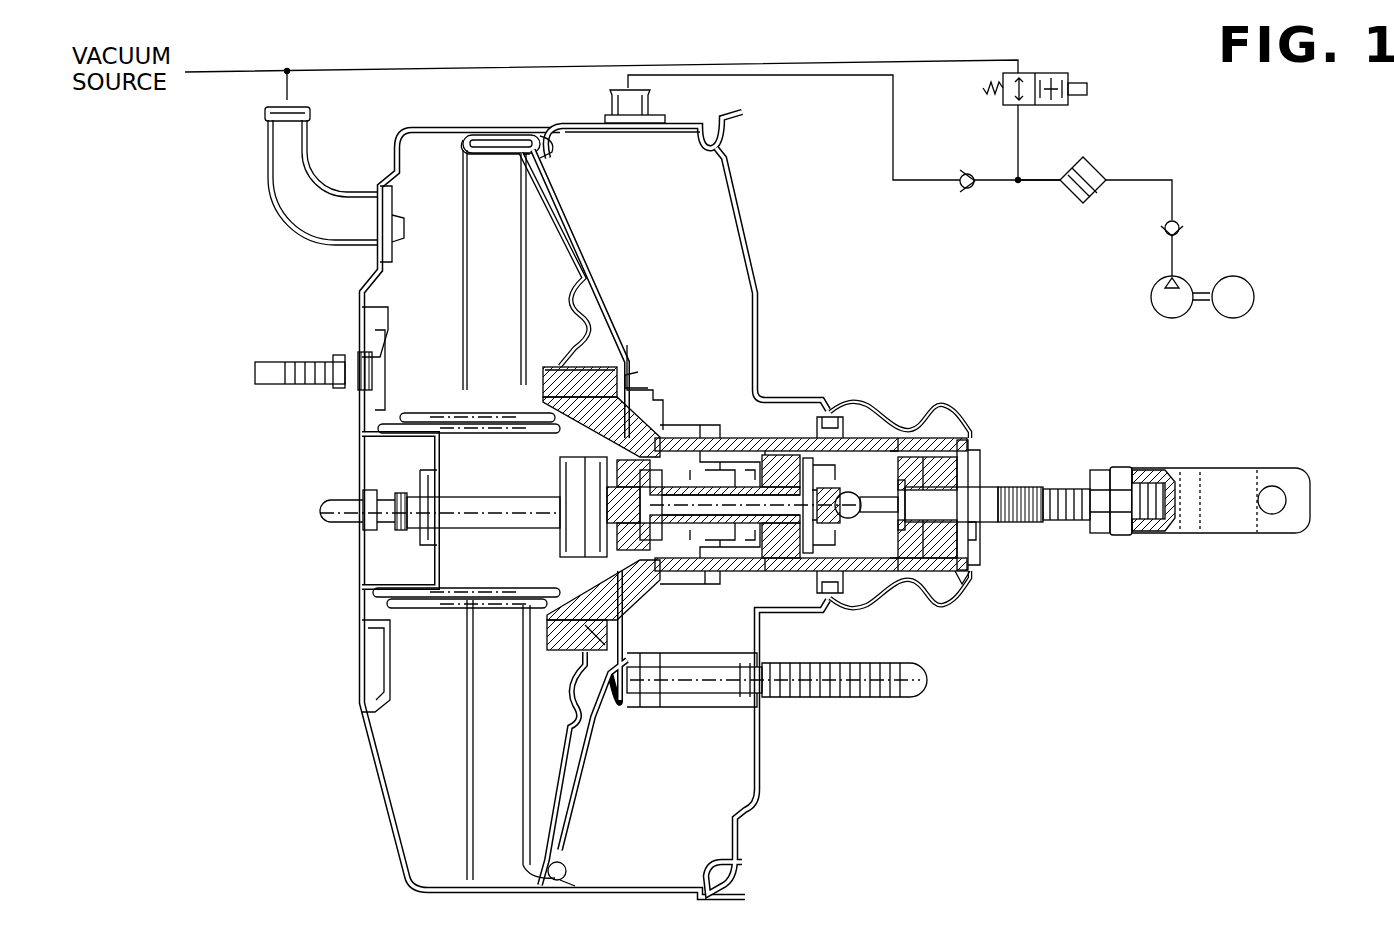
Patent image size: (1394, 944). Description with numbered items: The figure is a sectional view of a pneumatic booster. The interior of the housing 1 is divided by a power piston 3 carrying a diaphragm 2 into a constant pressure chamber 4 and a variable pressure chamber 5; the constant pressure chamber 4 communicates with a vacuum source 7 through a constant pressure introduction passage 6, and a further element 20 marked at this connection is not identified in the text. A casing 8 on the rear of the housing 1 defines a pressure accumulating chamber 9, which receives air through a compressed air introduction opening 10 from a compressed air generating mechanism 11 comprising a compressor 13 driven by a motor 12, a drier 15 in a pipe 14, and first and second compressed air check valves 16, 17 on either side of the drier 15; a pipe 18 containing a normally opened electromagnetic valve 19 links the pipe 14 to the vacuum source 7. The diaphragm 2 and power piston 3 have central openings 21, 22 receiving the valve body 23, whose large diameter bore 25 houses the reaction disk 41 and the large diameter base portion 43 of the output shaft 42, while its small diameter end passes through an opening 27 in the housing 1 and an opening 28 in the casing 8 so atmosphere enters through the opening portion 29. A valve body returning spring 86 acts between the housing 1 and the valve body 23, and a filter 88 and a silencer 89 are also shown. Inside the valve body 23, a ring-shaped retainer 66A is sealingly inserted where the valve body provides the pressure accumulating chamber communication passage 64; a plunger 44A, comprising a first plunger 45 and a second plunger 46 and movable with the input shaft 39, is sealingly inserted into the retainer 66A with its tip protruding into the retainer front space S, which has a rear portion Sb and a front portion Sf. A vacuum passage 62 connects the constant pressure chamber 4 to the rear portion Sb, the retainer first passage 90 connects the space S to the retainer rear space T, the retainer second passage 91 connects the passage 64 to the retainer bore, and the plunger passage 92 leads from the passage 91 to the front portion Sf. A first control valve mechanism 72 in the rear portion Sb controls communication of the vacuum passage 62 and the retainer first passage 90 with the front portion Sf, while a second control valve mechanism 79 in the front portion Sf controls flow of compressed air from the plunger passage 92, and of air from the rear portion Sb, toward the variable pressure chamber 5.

The housing 1 is at (347, 686).
The diaphragm 2 is at (492, 150).
The power piston 3 is at (545, 180).
The constant pressure chamber 4 is at (400, 185).
The variable pressure chamber 5 is at (512, 140).
The constant pressure introduction passage 6 is at (268, 175).
The vacuum source 7 is at (601, 69).
The casing 8 is at (742, 202).
The pressure accumulating chamber 9 is at (598, 158).
The compressed air introduction opening 10 is at (652, 100).
The compressed air generating mechanism 11 is at (1142, 172).
The motor 12 is at (1250, 281).
The compressor 13 is at (1185, 283).
The pipe 14 is at (893, 145).
The drier 15 is at (1085, 175).
The first compressed air check valve 16 is at (1181, 225).
The second compressed air check valve 17 is at (970, 196).
The pipe 18 is at (923, 62).
The normally opened electromagnetic valve 19 is at (1045, 70).
The branch connection 20 is at (285, 90).
The central opening 21 is at (550, 617).
The central opening 22 is at (613, 647).
The valve body 23 is at (545, 375).
The large diameter bore 25 is at (593, 537).
The opening 27 is at (690, 450).
The opening 28 is at (850, 573).
The opening portion 29 is at (977, 540).
The input shaft 39 is at (1055, 487).
The reaction disk 41 is at (593, 467).
The output shaft 42 is at (340, 513).
The large diameter base portion 43 is at (575, 485).
The plunger 44A is at (615, 520).
The first plunger 45 is at (713, 473).
The second plunger 46 is at (607, 500).
The vacuum passage 62 is at (635, 375).
The pressure accumulating chamber communication passage 64 is at (836, 410).
The retainer 66A is at (815, 540).
The first control valve mechanism 72 is at (770, 685).
The second control valve mechanism 79 is at (684, 440).
The valve body returning spring 86 is at (442, 408).
The filter 88 is at (972, 528).
The silencer 89 is at (975, 540).
The retainer first passage 90 is at (895, 560).
The retainer second passage 91 is at (910, 412).
The plunger passage 92 is at (767, 520).
The retainer front space S is at (698, 545).
The rear portion of retainer front space Sb is at (747, 490).
The front portion of retainer front space Sf is at (690, 625).
The retainer rear space T is at (960, 583).